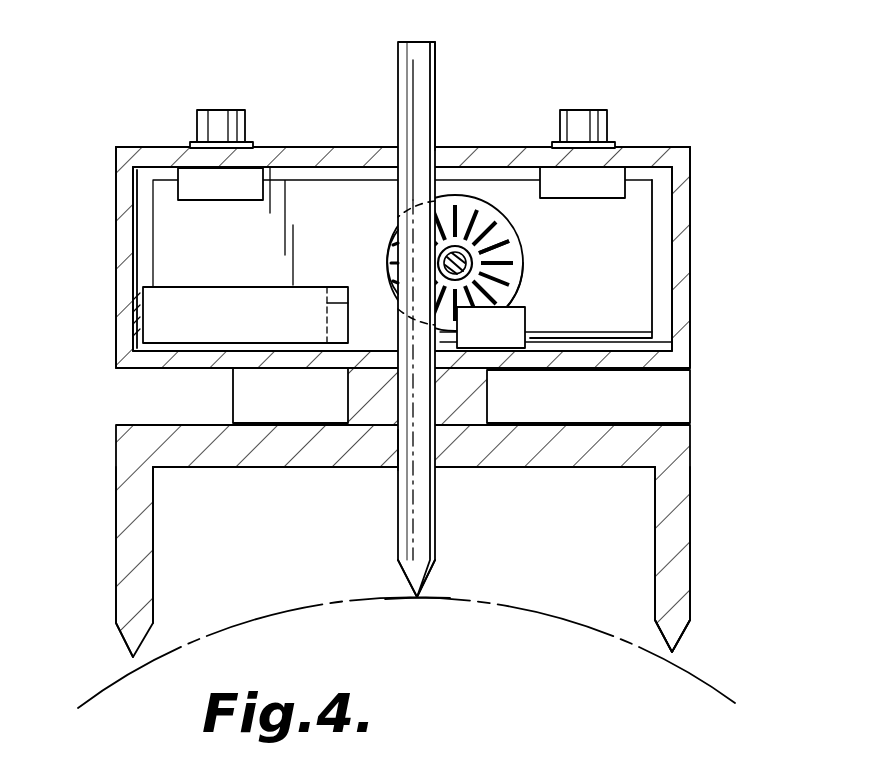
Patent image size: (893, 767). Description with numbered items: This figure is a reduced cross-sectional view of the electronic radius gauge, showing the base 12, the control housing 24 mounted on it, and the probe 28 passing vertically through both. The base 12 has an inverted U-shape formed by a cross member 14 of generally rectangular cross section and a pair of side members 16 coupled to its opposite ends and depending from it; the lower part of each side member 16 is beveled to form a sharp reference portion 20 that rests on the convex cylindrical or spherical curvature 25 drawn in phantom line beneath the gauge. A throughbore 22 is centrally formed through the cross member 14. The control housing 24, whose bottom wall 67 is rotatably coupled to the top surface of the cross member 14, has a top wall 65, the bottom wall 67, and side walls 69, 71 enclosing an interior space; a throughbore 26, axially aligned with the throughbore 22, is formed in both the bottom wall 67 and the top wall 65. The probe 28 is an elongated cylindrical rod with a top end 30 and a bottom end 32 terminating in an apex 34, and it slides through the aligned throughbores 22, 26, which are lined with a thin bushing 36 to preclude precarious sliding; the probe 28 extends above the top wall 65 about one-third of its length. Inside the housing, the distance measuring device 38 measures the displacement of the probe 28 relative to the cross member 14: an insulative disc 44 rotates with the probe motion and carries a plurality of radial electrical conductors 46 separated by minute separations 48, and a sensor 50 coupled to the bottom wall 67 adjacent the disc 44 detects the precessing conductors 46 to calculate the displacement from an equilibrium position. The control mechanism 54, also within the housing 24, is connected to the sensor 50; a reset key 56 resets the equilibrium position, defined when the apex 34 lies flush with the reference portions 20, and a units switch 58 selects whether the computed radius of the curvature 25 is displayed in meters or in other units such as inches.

The base 12 is at (688, 425).
The cross member 14 is at (580, 468).
The side members 16 is at (116, 530).
The reference portion 20 is at (688, 633).
The throughbore 22 is at (440, 470).
The control housing 24 is at (686, 147).
The curvature 25 is at (250, 620).
The throughbore 26 is at (437, 146).
The probe 28 is at (434, 75).
The top end 30 is at (401, 42).
The bottom end 32 is at (430, 582).
The apex 34 is at (410, 600).
The bushing 36 is at (443, 413).
The distance measuring device 38 is at (556, 251).
The disc 44 is at (513, 196).
The electrical conductors 46 is at (493, 232).
The separations 48 is at (528, 274).
The sensor 50 is at (527, 332).
The control mechanism 54 is at (185, 312).
The reset key 56 is at (583, 110).
The units switch 58 is at (222, 110).
The top wall 65 is at (333, 147).
The bottom wall 67 is at (235, 370).
The side wall 69 is at (116, 200).
The side wall 71 is at (690, 262).